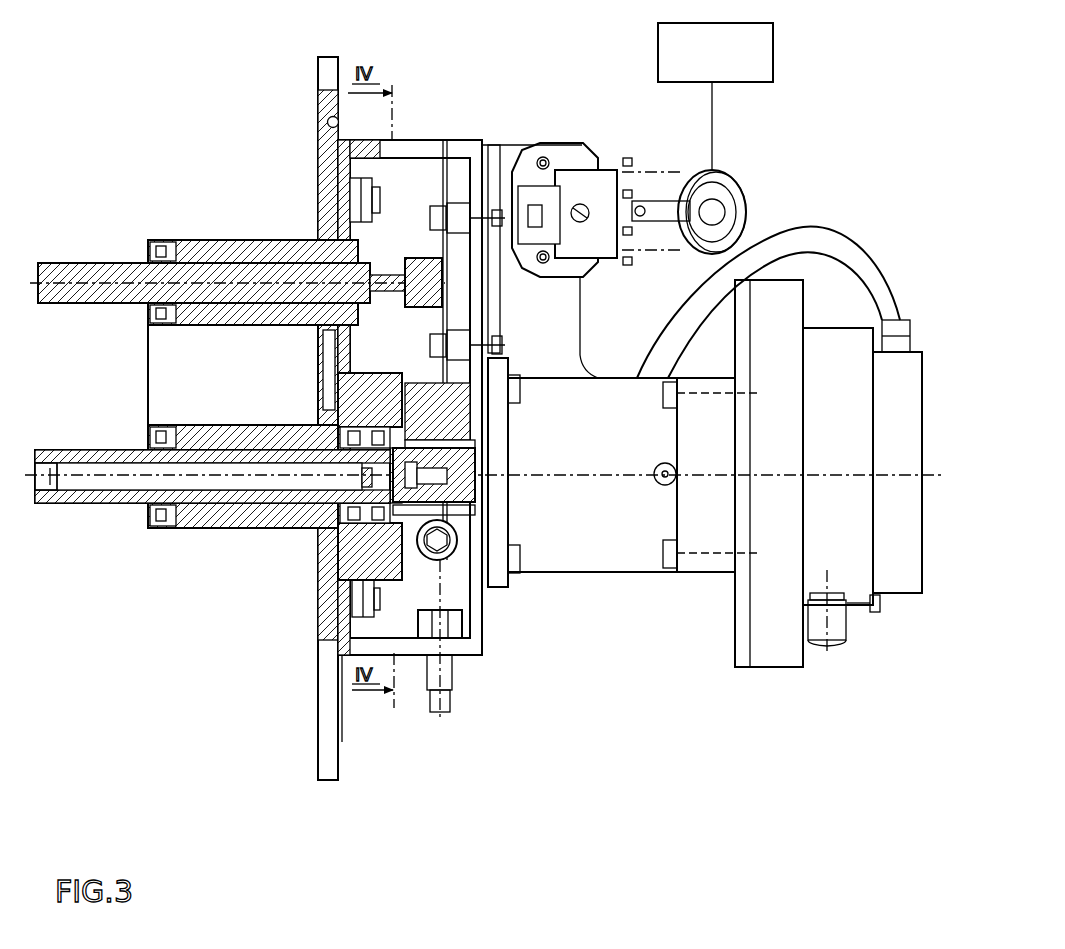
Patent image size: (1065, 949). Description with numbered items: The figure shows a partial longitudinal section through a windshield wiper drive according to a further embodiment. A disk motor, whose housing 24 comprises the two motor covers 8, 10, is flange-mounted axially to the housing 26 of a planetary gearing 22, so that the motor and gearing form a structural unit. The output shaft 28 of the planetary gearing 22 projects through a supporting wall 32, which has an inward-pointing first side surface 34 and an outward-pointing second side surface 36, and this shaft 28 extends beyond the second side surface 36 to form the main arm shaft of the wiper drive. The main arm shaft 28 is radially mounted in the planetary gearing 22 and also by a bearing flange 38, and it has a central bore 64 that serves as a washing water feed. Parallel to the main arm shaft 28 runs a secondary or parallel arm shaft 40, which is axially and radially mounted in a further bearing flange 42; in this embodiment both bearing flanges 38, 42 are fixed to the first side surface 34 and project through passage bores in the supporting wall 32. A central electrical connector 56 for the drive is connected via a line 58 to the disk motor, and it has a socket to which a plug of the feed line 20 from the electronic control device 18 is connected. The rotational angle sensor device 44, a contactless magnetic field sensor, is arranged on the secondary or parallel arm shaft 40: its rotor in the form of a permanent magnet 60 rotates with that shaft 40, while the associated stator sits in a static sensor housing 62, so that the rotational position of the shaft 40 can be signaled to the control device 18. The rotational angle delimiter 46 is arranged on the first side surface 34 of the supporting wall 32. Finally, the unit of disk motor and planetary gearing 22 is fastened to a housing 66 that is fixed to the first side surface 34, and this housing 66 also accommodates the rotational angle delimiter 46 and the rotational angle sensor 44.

The motor cover 8 is at (771, 656).
The motor cover 10 is at (870, 607).
The electronic control device 18 is at (732, 70).
The feed line 20 is at (716, 125).
The planetary gearing 22 is at (597, 560).
The housing of the disk motor 24 is at (773, 625).
The housing of the planetary gearing 26 is at (557, 560).
The output shaft 28 is at (80, 497).
The supporting wall 32 is at (333, 777).
The first side surface 34 is at (343, 752).
The second side surface 36 is at (317, 757).
The bearing flange 38 is at (190, 518).
The secondary or parallel arm shaft 40 is at (77, 295).
The further bearing flange 42 is at (208, 260).
The rotational angle sensor device 44 is at (456, 289).
The rotational angle delimiter 46 is at (427, 573).
The central electrical connector 56 is at (655, 150).
The line 58 is at (805, 250).
The permanent magnet 60 is at (417, 257).
The sensor housing 62 is at (458, 313).
The central bore 64 is at (140, 482).
The housing 66 is at (478, 628).